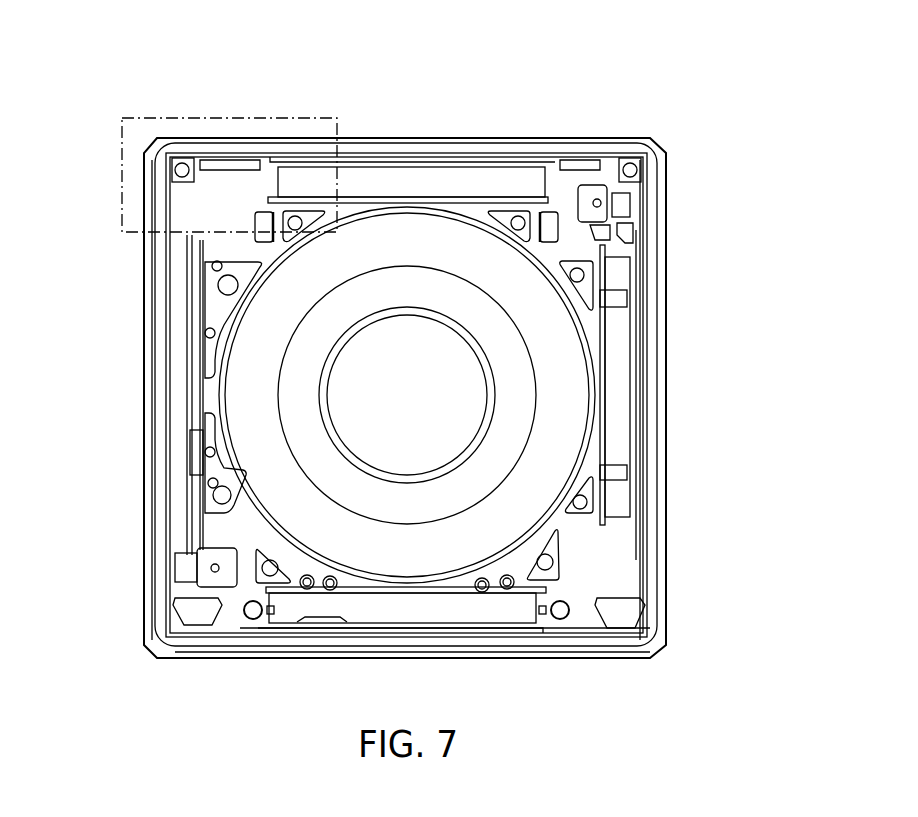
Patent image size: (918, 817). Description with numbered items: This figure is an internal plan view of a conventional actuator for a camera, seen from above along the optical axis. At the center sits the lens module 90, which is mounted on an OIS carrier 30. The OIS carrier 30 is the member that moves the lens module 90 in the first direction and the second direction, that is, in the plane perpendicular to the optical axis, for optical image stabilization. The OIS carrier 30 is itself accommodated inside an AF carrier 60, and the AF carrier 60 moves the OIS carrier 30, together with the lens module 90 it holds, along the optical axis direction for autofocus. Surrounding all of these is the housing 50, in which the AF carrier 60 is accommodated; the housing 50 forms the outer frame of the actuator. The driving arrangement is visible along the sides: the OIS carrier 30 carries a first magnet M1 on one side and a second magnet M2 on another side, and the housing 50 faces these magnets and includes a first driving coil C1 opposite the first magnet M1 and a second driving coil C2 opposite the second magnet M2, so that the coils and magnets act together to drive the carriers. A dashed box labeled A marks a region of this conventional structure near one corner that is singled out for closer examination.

The enlarged region A is at (228, 118).
The second driving coil C2 is at (405, 150).
The second magnet M2 is at (485, 178).
The housing 50 is at (565, 150).
The OIS carrier 30 is at (593, 233).
The lens module 90 is at (580, 333).
The first driving coil C1 is at (655, 392).
The first magnet M1 is at (625, 443).
The AF carrier 60 is at (170, 273).